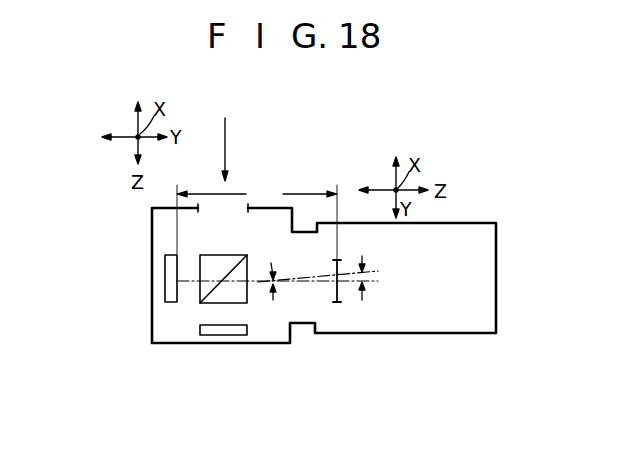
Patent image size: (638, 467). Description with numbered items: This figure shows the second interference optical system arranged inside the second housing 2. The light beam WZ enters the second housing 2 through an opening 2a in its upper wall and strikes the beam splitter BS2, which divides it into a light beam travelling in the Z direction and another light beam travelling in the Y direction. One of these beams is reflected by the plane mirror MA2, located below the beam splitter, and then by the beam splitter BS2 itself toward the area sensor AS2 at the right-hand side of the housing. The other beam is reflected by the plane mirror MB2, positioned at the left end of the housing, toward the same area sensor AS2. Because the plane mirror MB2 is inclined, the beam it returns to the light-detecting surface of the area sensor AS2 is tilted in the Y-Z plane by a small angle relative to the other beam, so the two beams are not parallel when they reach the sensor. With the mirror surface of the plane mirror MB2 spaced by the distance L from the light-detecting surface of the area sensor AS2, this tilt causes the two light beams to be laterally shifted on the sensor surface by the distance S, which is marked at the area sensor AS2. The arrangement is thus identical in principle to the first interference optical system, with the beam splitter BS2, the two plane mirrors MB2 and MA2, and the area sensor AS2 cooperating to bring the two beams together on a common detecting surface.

The second housing 2 is at (274, 345).
The opening 2a is at (212, 208).
The plane mirror MB2 is at (165, 277).
The beam splitter BS2 is at (222, 257).
The plane mirror MA2 is at (222, 336).
The area sensor AS2 is at (343, 297).
The lateral shift distance S is at (368, 277).
The spacing between mirror surface and light-detecting surface L is at (257, 221).
The light beam WZ is at (226, 140).